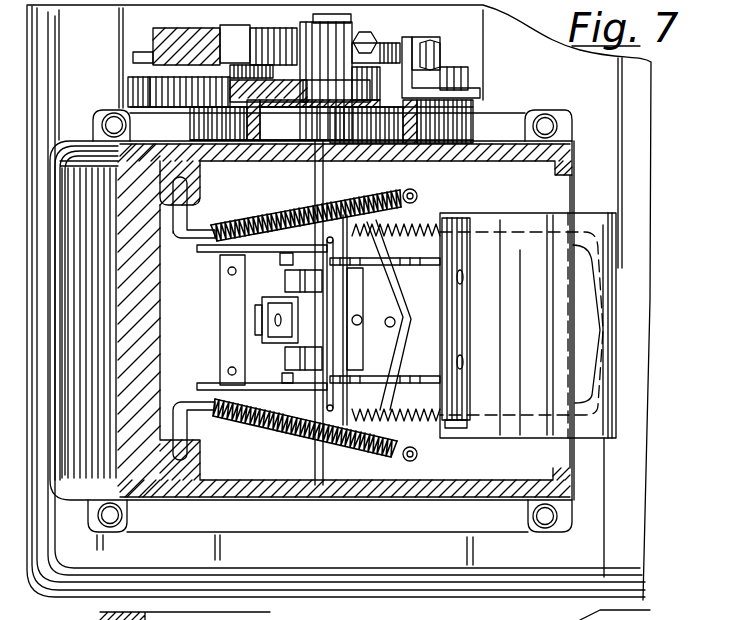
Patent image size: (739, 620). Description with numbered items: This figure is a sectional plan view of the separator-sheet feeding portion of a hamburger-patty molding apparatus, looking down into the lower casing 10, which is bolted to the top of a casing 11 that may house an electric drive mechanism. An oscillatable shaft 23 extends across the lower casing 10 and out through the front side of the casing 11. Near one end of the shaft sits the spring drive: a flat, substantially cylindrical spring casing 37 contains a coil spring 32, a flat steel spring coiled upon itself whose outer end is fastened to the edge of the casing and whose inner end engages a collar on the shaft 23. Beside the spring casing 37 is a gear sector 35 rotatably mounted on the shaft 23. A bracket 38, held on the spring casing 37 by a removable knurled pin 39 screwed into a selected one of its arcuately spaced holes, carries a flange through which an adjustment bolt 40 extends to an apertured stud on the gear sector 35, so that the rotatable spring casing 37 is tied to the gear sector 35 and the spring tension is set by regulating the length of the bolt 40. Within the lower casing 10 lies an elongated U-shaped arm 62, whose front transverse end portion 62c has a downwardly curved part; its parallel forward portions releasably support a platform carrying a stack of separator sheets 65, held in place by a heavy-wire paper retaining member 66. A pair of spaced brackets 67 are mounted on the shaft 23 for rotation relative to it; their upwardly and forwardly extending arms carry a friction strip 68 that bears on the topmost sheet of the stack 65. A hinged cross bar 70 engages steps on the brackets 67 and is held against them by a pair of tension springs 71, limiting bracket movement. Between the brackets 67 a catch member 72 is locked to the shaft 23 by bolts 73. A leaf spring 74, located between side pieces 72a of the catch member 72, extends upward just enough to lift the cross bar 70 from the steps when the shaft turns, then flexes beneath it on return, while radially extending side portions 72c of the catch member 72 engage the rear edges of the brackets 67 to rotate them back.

The lower casing 10 is at (572, 155).
The casing 11 is at (635, 110).
The shaft 23 is at (318, 20).
The coil spring 32 is at (300, 125).
The gear sector 35 is at (128, 85).
The spring casing 37 is at (443, 125).
The bracket 38 is at (415, 37).
The removable pin 39 is at (468, 75).
The adjustment bolt 40 is at (386, 45).
The U-shaped arm 62 is at (180, 212).
The front transverse end portion 62c is at (280, 217).
The stack of separator sheets 65 is at (585, 218).
The paper retaining member 66 is at (397, 312).
The brackets 67 is at (395, 262).
The friction strip 68 is at (460, 335).
The cross bar 70 is at (245, 303).
The tension springs 71 is at (415, 218).
The catch member 72 is at (283, 340).
The side pieces 72a is at (285, 284).
The side portions 72c is at (285, 258).
The bolts 73 is at (395, 290).
The leaf spring 74 is at (262, 322).